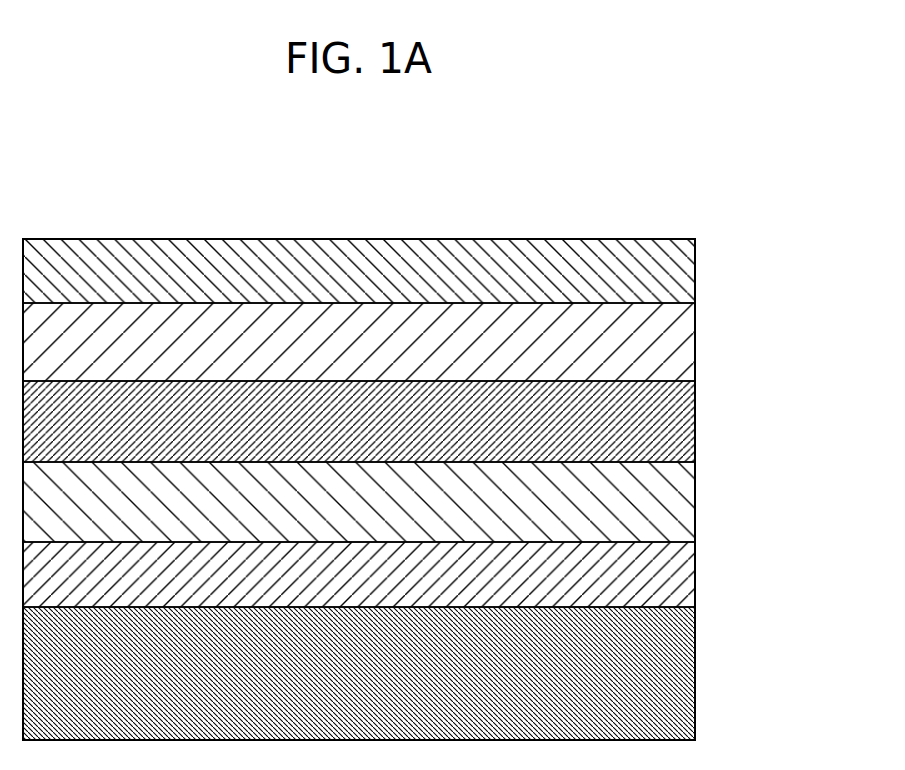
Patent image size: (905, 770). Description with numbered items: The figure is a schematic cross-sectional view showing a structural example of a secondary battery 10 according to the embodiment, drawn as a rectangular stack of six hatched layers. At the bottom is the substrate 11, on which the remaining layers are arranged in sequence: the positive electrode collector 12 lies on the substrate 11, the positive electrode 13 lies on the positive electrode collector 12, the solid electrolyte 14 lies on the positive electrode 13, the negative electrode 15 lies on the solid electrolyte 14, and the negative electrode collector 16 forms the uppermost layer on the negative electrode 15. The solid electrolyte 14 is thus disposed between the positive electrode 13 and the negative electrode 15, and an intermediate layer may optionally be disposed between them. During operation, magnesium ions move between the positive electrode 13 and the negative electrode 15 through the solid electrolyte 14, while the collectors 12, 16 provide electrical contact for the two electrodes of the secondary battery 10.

The secondary battery 10 is at (690, 181).
The substrate 11 is at (686, 675).
The positive electrode collector 12 is at (686, 577).
The positive electrode 13 is at (686, 503).
The solid electrolyte 14 is at (688, 424).
The negative electrode 15 is at (686, 345).
The negative electrode collector 16 is at (686, 273).